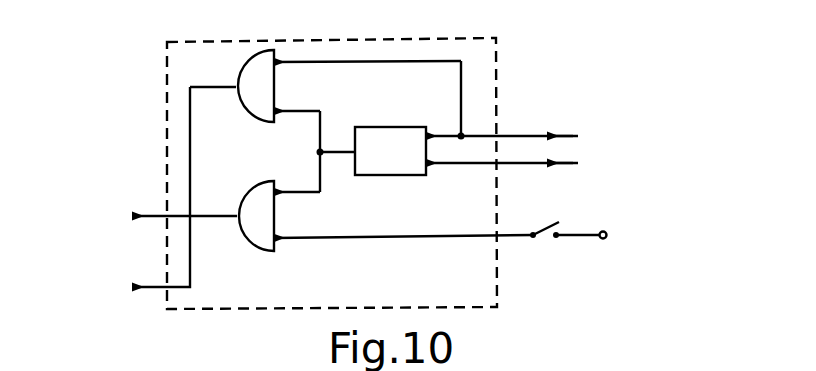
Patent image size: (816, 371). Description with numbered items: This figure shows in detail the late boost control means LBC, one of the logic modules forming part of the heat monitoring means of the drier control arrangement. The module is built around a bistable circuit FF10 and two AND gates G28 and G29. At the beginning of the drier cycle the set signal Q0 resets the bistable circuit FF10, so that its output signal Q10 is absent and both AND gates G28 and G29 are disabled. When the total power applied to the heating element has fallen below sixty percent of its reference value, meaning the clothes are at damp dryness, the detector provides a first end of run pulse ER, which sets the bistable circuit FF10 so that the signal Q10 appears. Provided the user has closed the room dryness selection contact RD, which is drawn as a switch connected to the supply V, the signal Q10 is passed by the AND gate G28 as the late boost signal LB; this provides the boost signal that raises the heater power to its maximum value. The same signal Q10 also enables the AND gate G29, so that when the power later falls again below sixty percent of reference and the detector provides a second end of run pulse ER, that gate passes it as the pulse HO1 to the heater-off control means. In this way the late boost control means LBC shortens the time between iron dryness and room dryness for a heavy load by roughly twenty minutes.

The late boost control means LBC is at (497, 73).
The AND gate G29 is at (325, 101).
The AND gate G28 is at (377, 233).
The bistable circuit FF10 is at (410, 118).
The signal Q10 is at (338, 150).
The end of run pulse ER is at (525, 135).
The set signal Q0 is at (608, 152).
The room dryness selection contact RD is at (561, 216).
The supply voltage + V is at (627, 234).
The late boost signal LB is at (163, 215).
The pulse HO1 is at (135, 194).